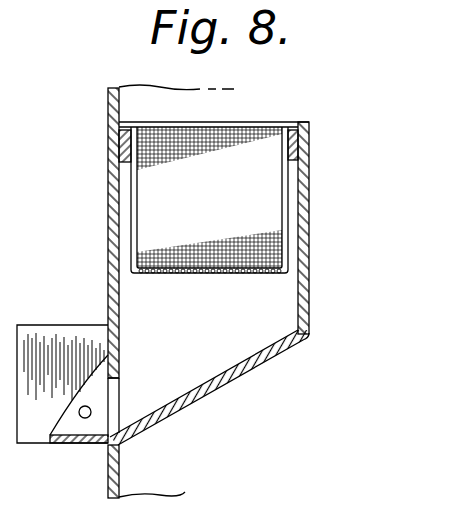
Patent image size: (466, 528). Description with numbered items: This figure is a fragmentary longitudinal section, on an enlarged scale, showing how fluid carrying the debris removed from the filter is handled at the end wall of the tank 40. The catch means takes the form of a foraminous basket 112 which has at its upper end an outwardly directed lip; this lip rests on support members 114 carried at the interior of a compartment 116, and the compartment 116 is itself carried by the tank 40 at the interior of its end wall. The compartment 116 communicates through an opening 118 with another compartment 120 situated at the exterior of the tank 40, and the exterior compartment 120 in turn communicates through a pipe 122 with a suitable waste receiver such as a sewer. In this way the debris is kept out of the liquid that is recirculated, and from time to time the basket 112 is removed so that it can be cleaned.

The foraminous basket 112 is at (235, 275).
The support members 114 is at (122, 148).
The compartment 116 is at (291, 350).
The opening 118 is at (118, 398).
The compartment 120 is at (66, 303).
The pipe 122 is at (86, 419).
The tank 40 is at (108, 481).